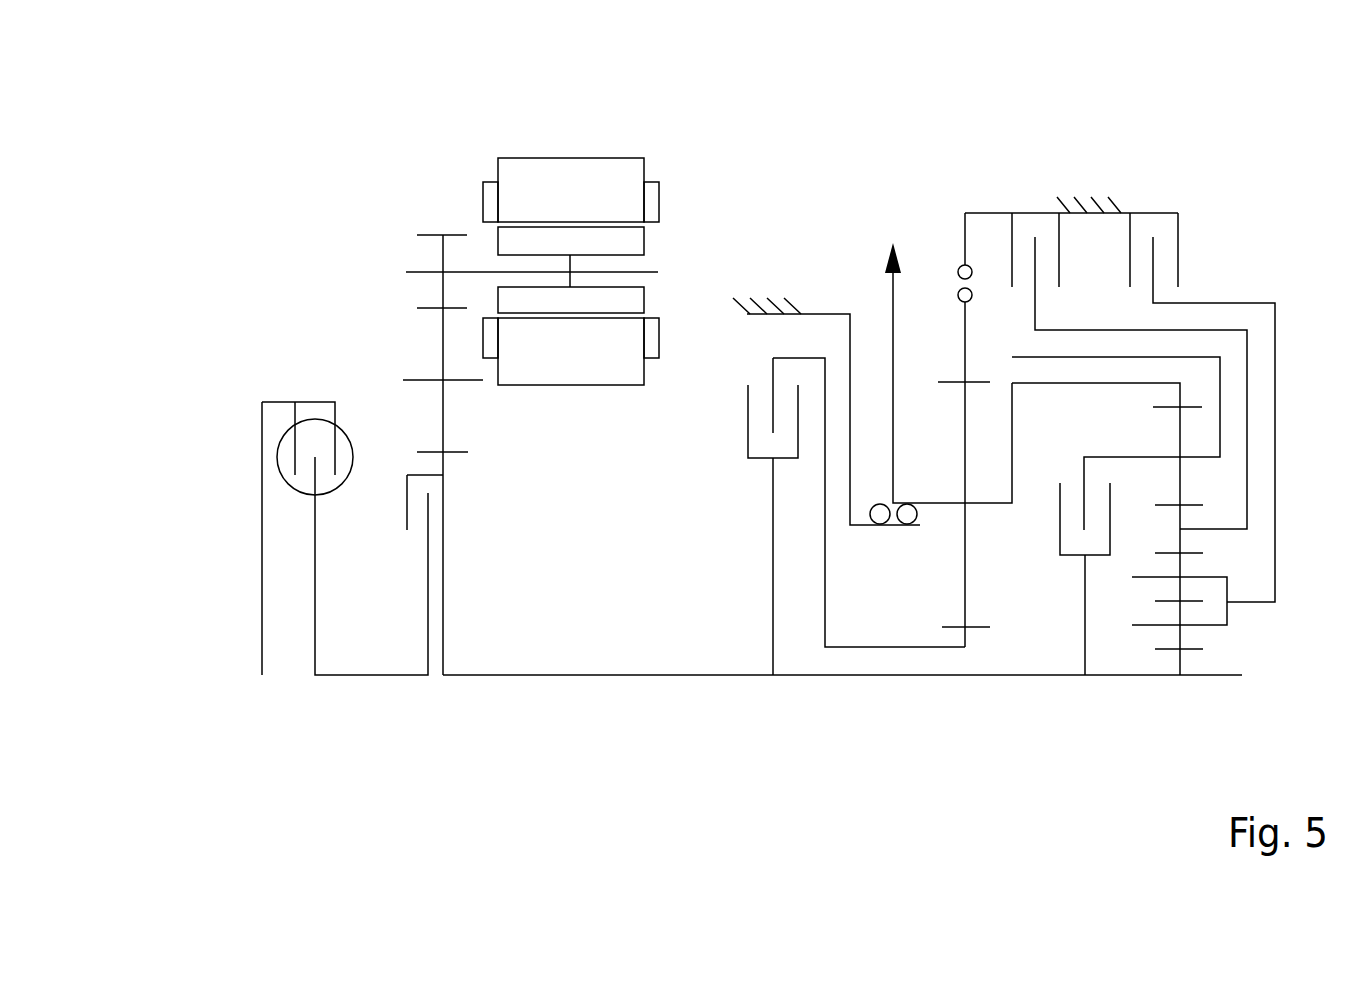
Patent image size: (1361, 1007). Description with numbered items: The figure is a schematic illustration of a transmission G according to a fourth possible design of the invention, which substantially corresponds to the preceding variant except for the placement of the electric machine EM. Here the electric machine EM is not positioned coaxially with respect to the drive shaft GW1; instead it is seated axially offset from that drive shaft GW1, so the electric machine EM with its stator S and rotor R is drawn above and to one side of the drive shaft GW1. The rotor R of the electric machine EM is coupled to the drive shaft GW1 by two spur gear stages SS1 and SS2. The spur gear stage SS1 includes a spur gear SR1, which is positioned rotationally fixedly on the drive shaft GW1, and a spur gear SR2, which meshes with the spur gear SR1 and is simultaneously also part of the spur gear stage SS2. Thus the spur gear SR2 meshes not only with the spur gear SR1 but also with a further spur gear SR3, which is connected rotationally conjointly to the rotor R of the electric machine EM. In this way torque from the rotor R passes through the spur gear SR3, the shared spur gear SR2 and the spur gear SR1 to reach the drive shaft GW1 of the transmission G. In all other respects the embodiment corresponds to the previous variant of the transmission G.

The transmission G is at (288, 174).
The spur gear SR3 is at (440, 253).
The electric machine EM is at (495, 140).
The stator S is at (555, 190).
The rotor R is at (607, 238).
The spur gear stage SS2 is at (407, 303).
The spur gear stage SS1 is at (413, 448).
The spur gear SR1 is at (445, 465).
The spur gear SR2 is at (445, 413).
The drive shaft GW1 is at (700, 675).